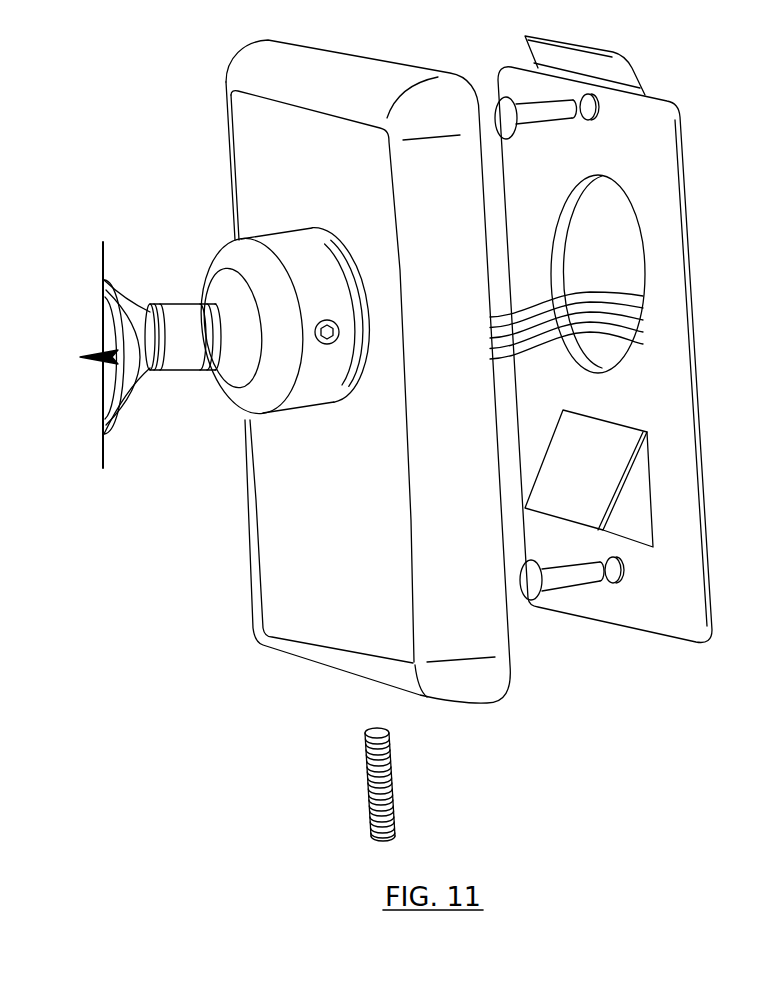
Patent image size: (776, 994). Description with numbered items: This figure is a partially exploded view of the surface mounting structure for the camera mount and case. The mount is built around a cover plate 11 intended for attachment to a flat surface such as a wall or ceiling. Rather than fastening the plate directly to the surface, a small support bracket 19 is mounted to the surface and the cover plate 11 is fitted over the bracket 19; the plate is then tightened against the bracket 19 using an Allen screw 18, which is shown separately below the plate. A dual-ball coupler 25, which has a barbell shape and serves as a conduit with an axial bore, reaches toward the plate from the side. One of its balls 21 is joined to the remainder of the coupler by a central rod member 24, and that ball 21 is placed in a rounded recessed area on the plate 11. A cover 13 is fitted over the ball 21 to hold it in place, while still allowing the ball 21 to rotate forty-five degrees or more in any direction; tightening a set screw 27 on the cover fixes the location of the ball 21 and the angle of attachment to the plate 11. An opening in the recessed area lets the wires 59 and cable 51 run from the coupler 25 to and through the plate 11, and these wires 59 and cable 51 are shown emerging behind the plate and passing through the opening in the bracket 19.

The cover plate 11 is at (255, 130).
The cover 13 is at (280, 247).
The ball 21 is at (230, 372).
The central rod member 24 is at (175, 310).
The dual-ball coupler 25 is at (163, 412).
The set screw 27 is at (323, 343).
The support bracket 19 is at (653, 142).
The wires 59 is at (585, 295).
The cable 51 is at (530, 355).
The Allen screw 18 is at (392, 798).